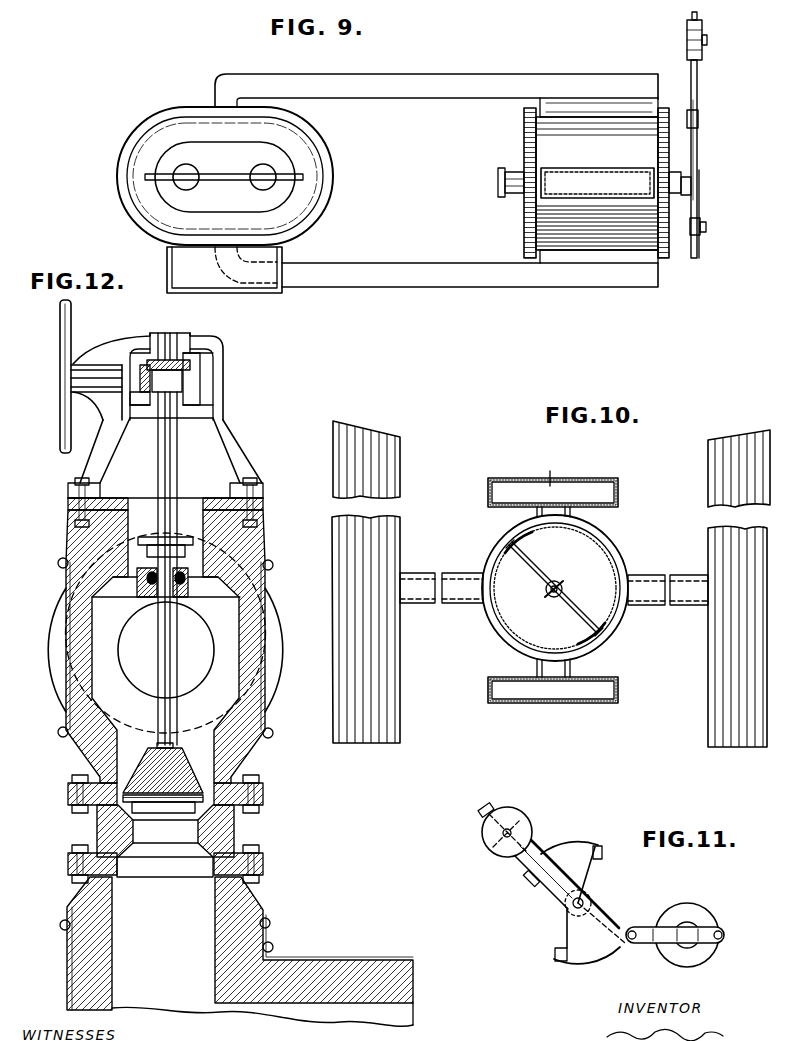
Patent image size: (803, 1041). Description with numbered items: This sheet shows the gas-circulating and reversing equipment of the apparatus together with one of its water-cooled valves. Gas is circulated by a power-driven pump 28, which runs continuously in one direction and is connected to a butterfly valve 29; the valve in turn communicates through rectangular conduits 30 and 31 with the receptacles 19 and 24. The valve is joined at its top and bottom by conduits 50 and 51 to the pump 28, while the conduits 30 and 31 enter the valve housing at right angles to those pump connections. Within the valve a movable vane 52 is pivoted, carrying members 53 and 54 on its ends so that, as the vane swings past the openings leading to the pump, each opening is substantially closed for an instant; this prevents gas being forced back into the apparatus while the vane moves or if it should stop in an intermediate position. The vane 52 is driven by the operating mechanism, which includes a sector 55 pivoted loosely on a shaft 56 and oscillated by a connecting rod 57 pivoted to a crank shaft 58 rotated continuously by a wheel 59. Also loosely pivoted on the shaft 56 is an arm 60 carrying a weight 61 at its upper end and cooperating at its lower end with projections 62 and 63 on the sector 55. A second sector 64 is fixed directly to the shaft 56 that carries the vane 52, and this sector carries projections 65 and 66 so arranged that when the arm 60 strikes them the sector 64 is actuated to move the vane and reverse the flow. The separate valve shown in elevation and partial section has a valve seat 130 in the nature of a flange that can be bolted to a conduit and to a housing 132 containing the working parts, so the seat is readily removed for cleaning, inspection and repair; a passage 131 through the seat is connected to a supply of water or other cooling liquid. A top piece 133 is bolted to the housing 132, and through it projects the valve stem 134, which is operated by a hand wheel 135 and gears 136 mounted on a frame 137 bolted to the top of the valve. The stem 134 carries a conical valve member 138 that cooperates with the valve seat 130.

In FIG. 10, the receptacle 19 is at (391, 671).
In FIG. 10, the receptacle 24 is at (713, 649).
In FIG. 9, the power-driven pump 28 is at (208, 130).
In FIG. 9, the butterfly valve 29 is at (540, 141).
In FIG. 10, the rectangular conduit 30 is at (425, 573).
In FIG. 9, the rectangular conduit 31 is at (589, 188).
In FIG. 10, the rectangular conduit 31 is at (648, 586).
In FIG. 9, the conduit 50 is at (443, 79).
In FIG. 10, the conduit 50 is at (592, 483).
In FIG. 9, the conduit 51 is at (390, 273).
In FIG. 10, the conduit 51 is at (580, 696).
In FIG. 10, the movable vane 52 is at (546, 577).
In FIG. 10, the member 53 is at (556, 567).
In FIG. 10, the member 54 is at (602, 619).
In FIG. 11, the sector 55 is at (585, 960).
In FIG. 10, the shaft 56 is at (552, 598).
In FIG. 11, the shaft 56 is at (587, 901).
In FIG. 11, the connecting rod 57 is at (647, 943).
In FIG. 11, the crank shaft 58 is at (703, 923).
In FIG. 11, the wheel 59 is at (693, 908).
In FIG. 9, the arm 60 is at (699, 86).
In FIG. 11, the arm 60 is at (562, 897).
In FIG. 9, the weight 61 is at (703, 27).
In FIG. 11, the weight 61 is at (494, 852).
In FIG. 9, the projection 62 is at (678, 233).
In FIG. 11, the projection 62 is at (555, 952).
In FIG. 11, the projection 63 is at (623, 927).
In FIG. 11, the second sector 64 is at (578, 845).
In FIG. 11, the projection 65 is at (603, 855).
In FIG. 9, the projection 66 is at (700, 119).
In FIG. 11, the projection 66 is at (528, 880).
In FIG. 12, the valve seat 130 is at (210, 808).
In FIG. 12, the passage 131 is at (213, 837).
In FIG. 12, the housing 132 is at (77, 609).
In FIG. 12, the top piece 133 is at (258, 504).
In FIG. 12, the valve stem 134 is at (172, 468).
In FIG. 12, the hand wheel 135 is at (62, 443).
In FIG. 12, the gears 136 is at (197, 365).
In FIG. 12, the frame 137 is at (207, 383).
In FIG. 12, the valve member 138 is at (147, 780).